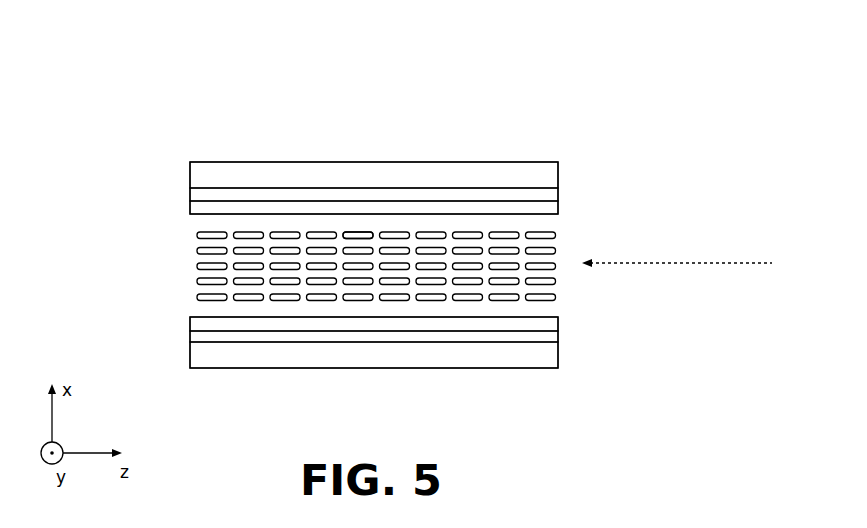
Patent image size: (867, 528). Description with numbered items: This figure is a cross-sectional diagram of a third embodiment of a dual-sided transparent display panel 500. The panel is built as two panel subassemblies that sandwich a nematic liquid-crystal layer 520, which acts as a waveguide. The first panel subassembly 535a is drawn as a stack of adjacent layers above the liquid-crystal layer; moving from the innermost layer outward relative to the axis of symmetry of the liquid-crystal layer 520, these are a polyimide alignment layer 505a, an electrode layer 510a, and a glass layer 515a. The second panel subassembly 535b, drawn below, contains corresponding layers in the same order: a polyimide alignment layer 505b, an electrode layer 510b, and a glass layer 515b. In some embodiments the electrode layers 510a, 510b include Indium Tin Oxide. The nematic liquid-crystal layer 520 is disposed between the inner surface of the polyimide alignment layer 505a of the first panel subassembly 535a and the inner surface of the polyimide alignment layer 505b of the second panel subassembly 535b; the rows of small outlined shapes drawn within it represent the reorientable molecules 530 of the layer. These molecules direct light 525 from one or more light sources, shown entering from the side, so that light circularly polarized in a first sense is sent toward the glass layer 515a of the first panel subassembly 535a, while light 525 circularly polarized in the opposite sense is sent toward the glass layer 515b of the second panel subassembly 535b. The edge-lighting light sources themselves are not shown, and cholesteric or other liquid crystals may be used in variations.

The dual-sided transparent display panel 500 is at (462, 76).
The first panel subassembly 535a is at (188, 163).
The glass layer 515a is at (558, 173).
The electrode layer 510a is at (558, 192).
The polyimide alignment layer 505a is at (558, 209).
The nematic liquid-crystal layer 520 is at (188, 218).
The liquid crystal molecule 530 is at (364, 232).
The light 525 is at (720, 263).
The second panel subassembly 535b is at (188, 318).
The polyimide alignment layer 505b is at (558, 323).
The electrode layer 510b is at (558, 337).
The glass layer 515b is at (428, 368).